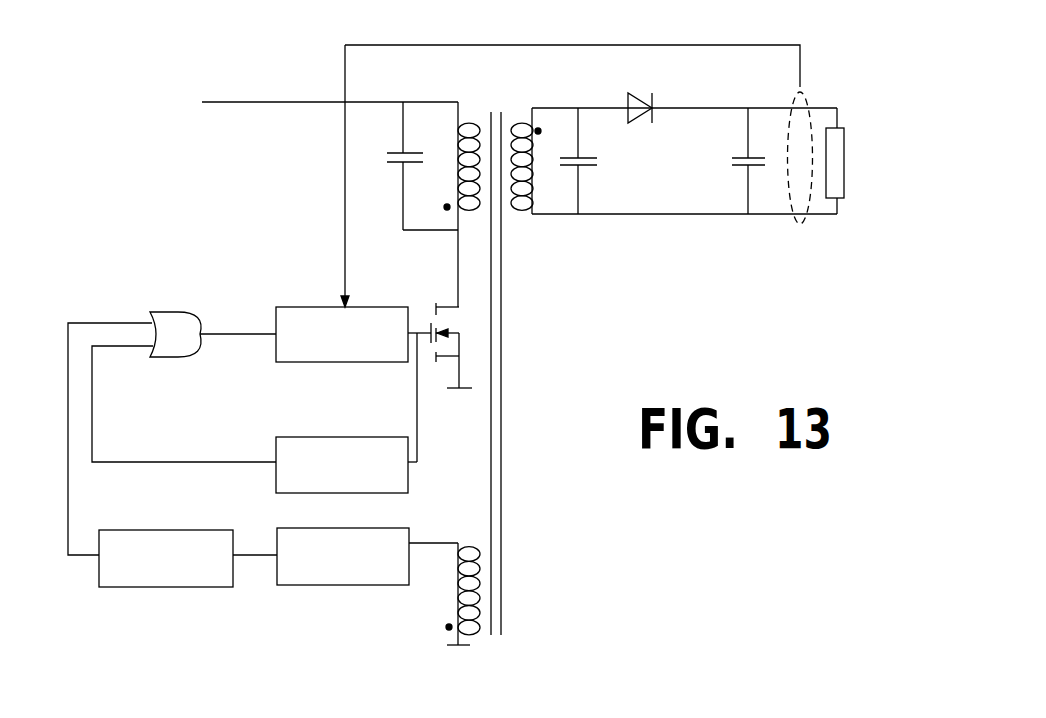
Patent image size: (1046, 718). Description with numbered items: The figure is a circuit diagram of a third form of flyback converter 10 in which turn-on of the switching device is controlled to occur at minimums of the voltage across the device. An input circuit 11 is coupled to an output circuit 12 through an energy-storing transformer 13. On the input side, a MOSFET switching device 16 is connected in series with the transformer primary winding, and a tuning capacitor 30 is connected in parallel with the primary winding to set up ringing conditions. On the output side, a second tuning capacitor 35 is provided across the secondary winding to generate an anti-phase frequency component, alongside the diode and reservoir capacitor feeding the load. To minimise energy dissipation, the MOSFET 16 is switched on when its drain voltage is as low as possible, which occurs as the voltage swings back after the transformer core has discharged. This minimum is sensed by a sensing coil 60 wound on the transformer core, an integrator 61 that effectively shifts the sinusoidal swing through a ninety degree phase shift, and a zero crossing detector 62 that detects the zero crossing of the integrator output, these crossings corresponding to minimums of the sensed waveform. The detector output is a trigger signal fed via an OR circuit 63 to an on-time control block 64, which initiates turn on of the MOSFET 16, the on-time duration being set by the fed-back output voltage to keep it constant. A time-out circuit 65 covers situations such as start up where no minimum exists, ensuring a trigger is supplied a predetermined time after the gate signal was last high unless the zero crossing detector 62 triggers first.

The flyback converter 10 is at (294, 72).
The input circuit 11 is at (287, 190).
The output circuit 12 is at (676, 177).
The energy-storing transformer 13 is at (526, 226).
The switching device 16 is at (433, 326).
The tuning capacitor 30 is at (395, 163).
The second tuning capacitor 35 is at (581, 168).
The sensing coil 60 is at (477, 562).
The integrator 61 is at (386, 587).
The zero crossing detector 62 is at (212, 588).
The OR circuit 63 is at (178, 352).
The on-time control block 64 is at (309, 363).
The time-out circuit 65 is at (333, 436).